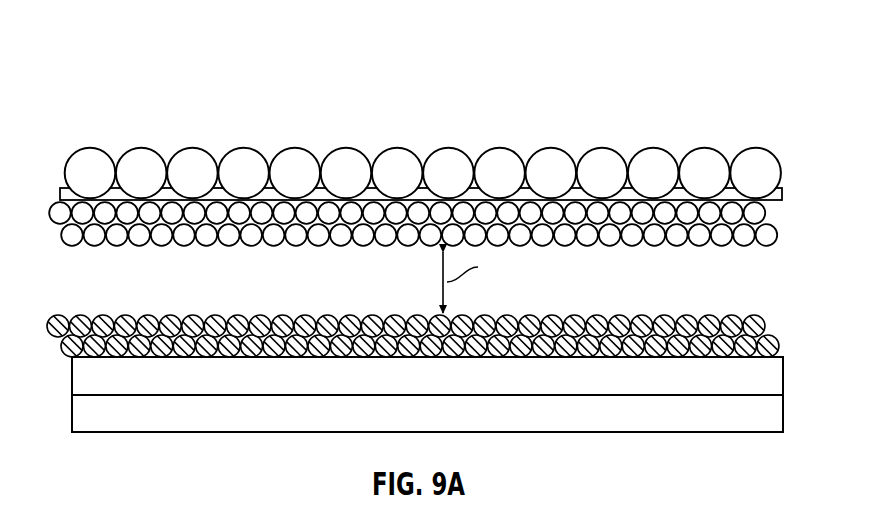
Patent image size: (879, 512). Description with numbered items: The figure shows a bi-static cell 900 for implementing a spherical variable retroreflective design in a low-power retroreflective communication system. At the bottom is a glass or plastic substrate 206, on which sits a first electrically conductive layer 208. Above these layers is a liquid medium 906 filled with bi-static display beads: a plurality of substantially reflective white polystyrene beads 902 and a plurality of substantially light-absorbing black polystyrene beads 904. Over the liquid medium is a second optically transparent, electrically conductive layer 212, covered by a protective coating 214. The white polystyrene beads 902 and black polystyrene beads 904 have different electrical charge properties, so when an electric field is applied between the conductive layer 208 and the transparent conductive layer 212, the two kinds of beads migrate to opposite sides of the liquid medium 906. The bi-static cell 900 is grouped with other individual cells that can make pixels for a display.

The bi-static cell 900 is at (165, 62).
The liquid medium 906 is at (103, 282).
The protective coating 214 is at (650, 148).
The second optically transparent, electrically conductive layer 212 is at (782, 190).
The white polystyrene beads 902 is at (778, 236).
The black polystyrene beads 904 is at (766, 326).
The first electrically conductive layer 208 is at (783, 375).
The glass or plastic substrate 206 is at (783, 414).